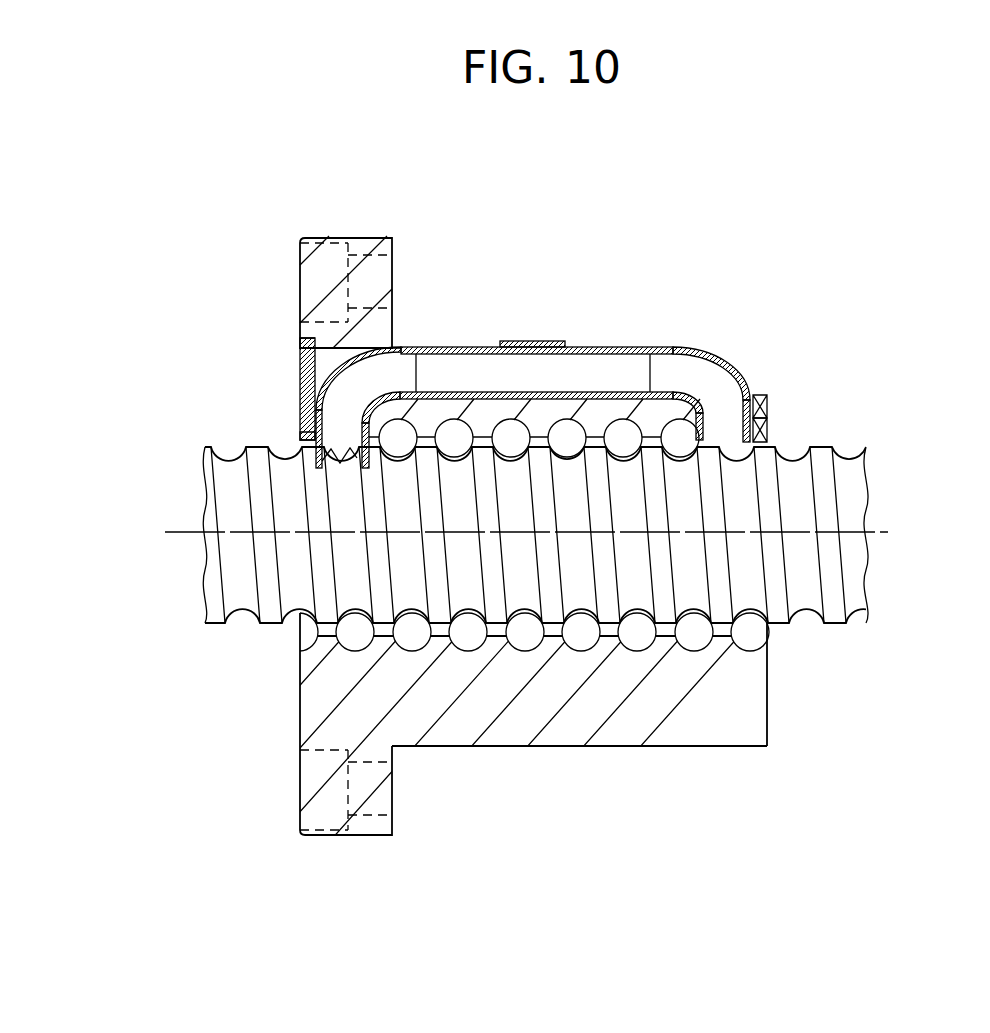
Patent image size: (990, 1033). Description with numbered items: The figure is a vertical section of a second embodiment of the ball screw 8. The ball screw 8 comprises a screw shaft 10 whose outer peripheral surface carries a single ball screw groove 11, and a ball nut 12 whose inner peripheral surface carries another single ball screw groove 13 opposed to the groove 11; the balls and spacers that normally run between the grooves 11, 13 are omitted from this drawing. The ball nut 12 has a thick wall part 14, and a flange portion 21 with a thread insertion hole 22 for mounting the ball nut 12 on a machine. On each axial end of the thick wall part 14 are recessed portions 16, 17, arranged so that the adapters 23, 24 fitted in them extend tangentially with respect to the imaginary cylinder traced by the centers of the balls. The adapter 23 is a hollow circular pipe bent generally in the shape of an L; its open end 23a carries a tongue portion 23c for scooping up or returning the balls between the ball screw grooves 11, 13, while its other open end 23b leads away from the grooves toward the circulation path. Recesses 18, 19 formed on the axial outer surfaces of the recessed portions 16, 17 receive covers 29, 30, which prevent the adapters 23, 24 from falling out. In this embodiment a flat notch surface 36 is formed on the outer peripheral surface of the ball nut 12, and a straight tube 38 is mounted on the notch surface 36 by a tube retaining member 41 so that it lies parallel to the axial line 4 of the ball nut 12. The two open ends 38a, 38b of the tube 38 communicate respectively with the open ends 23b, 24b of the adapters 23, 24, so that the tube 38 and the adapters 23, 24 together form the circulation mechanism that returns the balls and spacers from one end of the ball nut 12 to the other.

The axial line 4 is at (178, 538).
The ball screw 8 is at (701, 205).
The screw shaft 10 is at (857, 500).
The ball screw groove 11 is at (812, 610).
The ball nut 12 is at (503, 748).
The ball screw groove 13 is at (692, 638).
The thick wall part 14 is at (587, 720).
The recessed portion 16 is at (298, 360).
The recessed portion 17 is at (710, 412).
The recess for cover 18 is at (298, 400).
The recess for cover 19 is at (768, 428).
The flange portion 21 is at (365, 826).
The thread insertion hole 22 is at (300, 783).
The adapter 23 is at (298, 377).
The open end 23a is at (298, 437).
The open end 23b is at (405, 356).
The tongue portion 23c is at (322, 468).
The adapter 24 is at (703, 349).
The open end 24b is at (658, 370).
The cover 29 is at (298, 353).
The cover 30 is at (760, 408).
The flat notch surface 36 is at (573, 392).
The straight tube 38 is at (487, 347).
The open end 38a is at (423, 375).
The open end 38b is at (640, 365).
The tube retaining member 41 is at (528, 341).